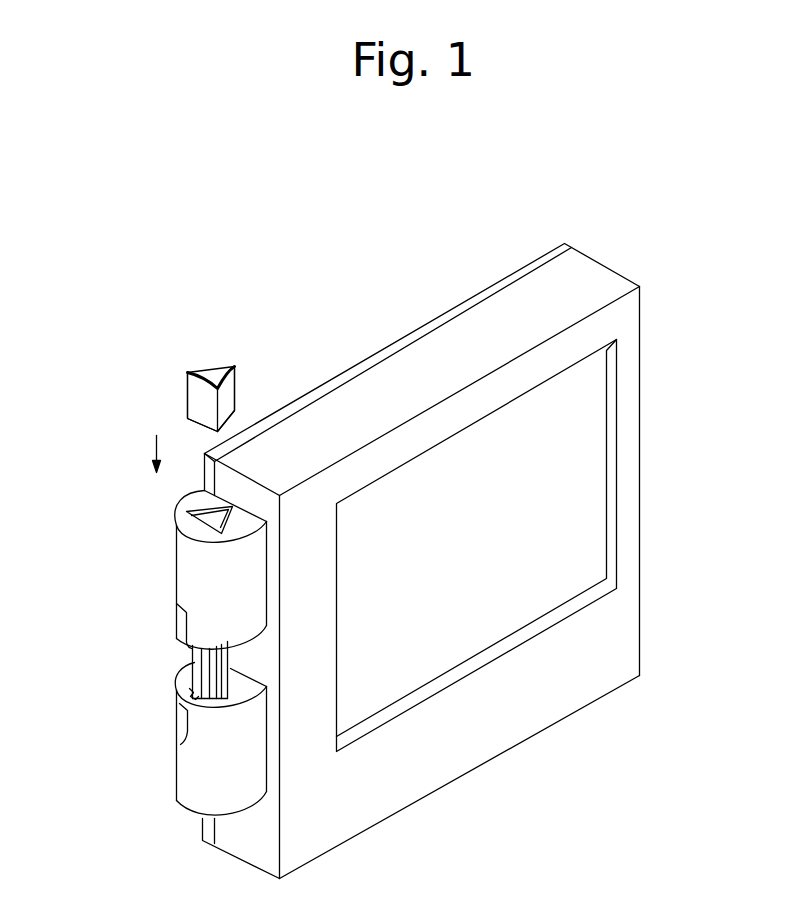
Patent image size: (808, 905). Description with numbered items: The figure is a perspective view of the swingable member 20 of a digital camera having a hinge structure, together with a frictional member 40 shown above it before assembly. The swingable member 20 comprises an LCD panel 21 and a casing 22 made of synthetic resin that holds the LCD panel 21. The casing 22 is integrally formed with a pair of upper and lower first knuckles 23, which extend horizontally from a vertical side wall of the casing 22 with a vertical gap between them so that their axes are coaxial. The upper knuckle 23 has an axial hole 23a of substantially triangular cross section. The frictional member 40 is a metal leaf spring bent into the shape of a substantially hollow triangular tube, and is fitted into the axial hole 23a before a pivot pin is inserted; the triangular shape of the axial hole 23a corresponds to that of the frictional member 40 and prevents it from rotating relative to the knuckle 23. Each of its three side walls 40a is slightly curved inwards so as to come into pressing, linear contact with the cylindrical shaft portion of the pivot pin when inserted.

The swingable member 20 is at (523, 294).
The LCD panel 21 is at (567, 463).
The casing 22 is at (625, 322).
The first knuckle 23 is at (195, 570).
The axial hole 23a is at (203, 518).
The frictional member 40 is at (240, 388).
The side wall 40a is at (218, 366).